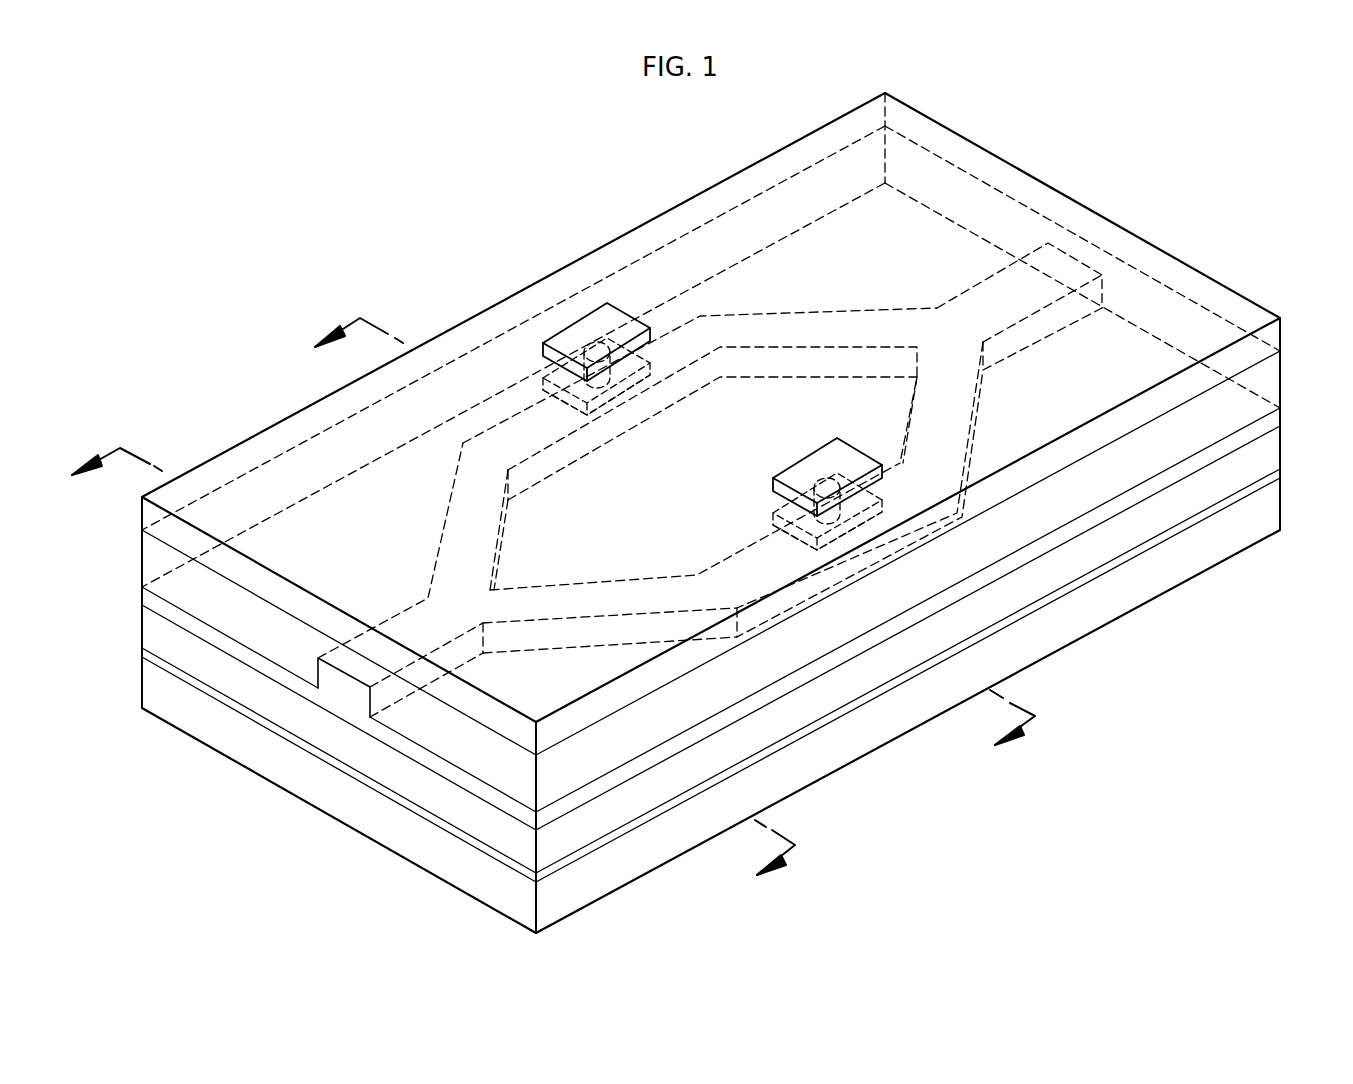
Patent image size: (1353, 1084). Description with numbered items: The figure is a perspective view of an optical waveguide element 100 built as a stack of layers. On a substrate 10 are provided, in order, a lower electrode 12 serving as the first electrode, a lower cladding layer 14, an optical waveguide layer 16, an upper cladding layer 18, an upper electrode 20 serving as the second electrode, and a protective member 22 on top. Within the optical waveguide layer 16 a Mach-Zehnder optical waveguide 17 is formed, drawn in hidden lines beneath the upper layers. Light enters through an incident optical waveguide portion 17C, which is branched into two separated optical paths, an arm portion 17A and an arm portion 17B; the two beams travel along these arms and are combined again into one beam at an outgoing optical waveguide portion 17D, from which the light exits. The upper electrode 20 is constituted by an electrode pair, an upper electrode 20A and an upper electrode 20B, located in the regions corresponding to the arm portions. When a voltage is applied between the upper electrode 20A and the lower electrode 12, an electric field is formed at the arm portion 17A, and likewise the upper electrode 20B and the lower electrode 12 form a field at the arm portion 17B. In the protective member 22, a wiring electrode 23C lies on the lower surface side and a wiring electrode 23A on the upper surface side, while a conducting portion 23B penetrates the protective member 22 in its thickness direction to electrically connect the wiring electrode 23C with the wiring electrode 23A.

The optical waveguide element 100 is at (696, 511).
The substrate 10 is at (1282, 506).
The lower electrode 12 is at (1282, 476).
The lower cladding layer 14 is at (1282, 450).
The optical waveguide layer 16 is at (1282, 418).
The upper cladding layer 18 is at (1282, 380).
The protective member 22 is at (1282, 351).
The optical waveguide 17 is at (652, 520).
The arm portion 17A is at (615, 578).
The arm portion 17B is at (588, 455).
The incident optical waveguide portion 17C is at (407, 630).
The outgoing optical waveguide portion 17D is at (1040, 337).
The upper electrode 20 is at (724, 403).
The upper electrode 20A is at (724, 416).
The upper electrode 20B is at (730, 558).
The wiring electrode 23A is at (613, 317).
The conducting portion 23B is at (650, 362).
The wiring electrode 23C is at (648, 388).